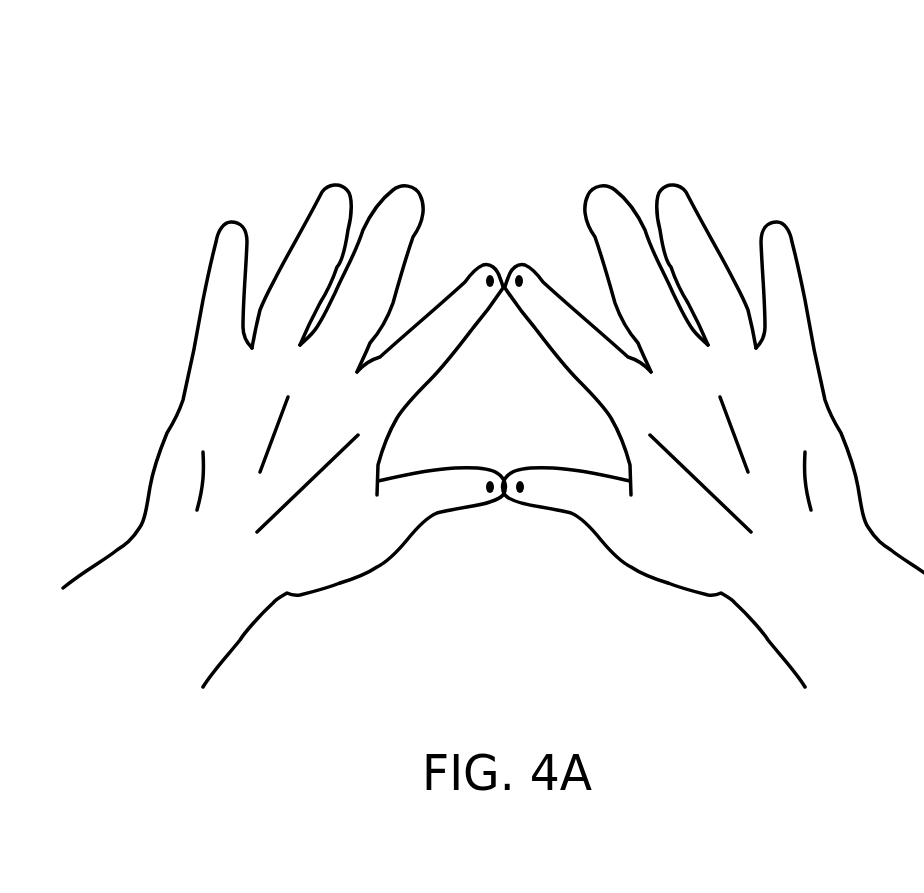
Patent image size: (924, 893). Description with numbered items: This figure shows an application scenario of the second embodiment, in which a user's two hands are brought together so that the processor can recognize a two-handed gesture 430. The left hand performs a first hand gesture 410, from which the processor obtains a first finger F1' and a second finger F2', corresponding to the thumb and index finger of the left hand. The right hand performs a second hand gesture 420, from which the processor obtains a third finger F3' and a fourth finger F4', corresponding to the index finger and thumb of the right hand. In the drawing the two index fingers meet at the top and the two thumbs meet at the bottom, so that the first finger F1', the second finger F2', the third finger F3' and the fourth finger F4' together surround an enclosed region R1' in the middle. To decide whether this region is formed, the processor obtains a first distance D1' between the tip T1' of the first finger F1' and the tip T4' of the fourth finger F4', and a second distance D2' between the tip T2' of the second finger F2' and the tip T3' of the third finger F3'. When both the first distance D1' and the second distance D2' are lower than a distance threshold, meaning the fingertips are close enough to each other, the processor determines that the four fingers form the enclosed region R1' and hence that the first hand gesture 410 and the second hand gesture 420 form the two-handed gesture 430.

The first hand gesture 410 is at (277, 201).
The second hand gesture 420 is at (731, 201).
The two-handed gesture 430 is at (112, 113).
The first finger F1' is at (422, 534).
The second finger F2' is at (430, 353).
The third finger F3' is at (578, 361).
The fourth finger F4' is at (585, 544).
The tip of the first finger T1' is at (492, 531).
The tip of the second finger T2' is at (491, 230).
The tip of the third finger T3' is at (531, 239).
The tip of the fourth finger T4' is at (526, 542).
The enclosed region R1' is at (403, 539).
The first distance D1' is at (488, 436).
The second distance D2' is at (512, 344).